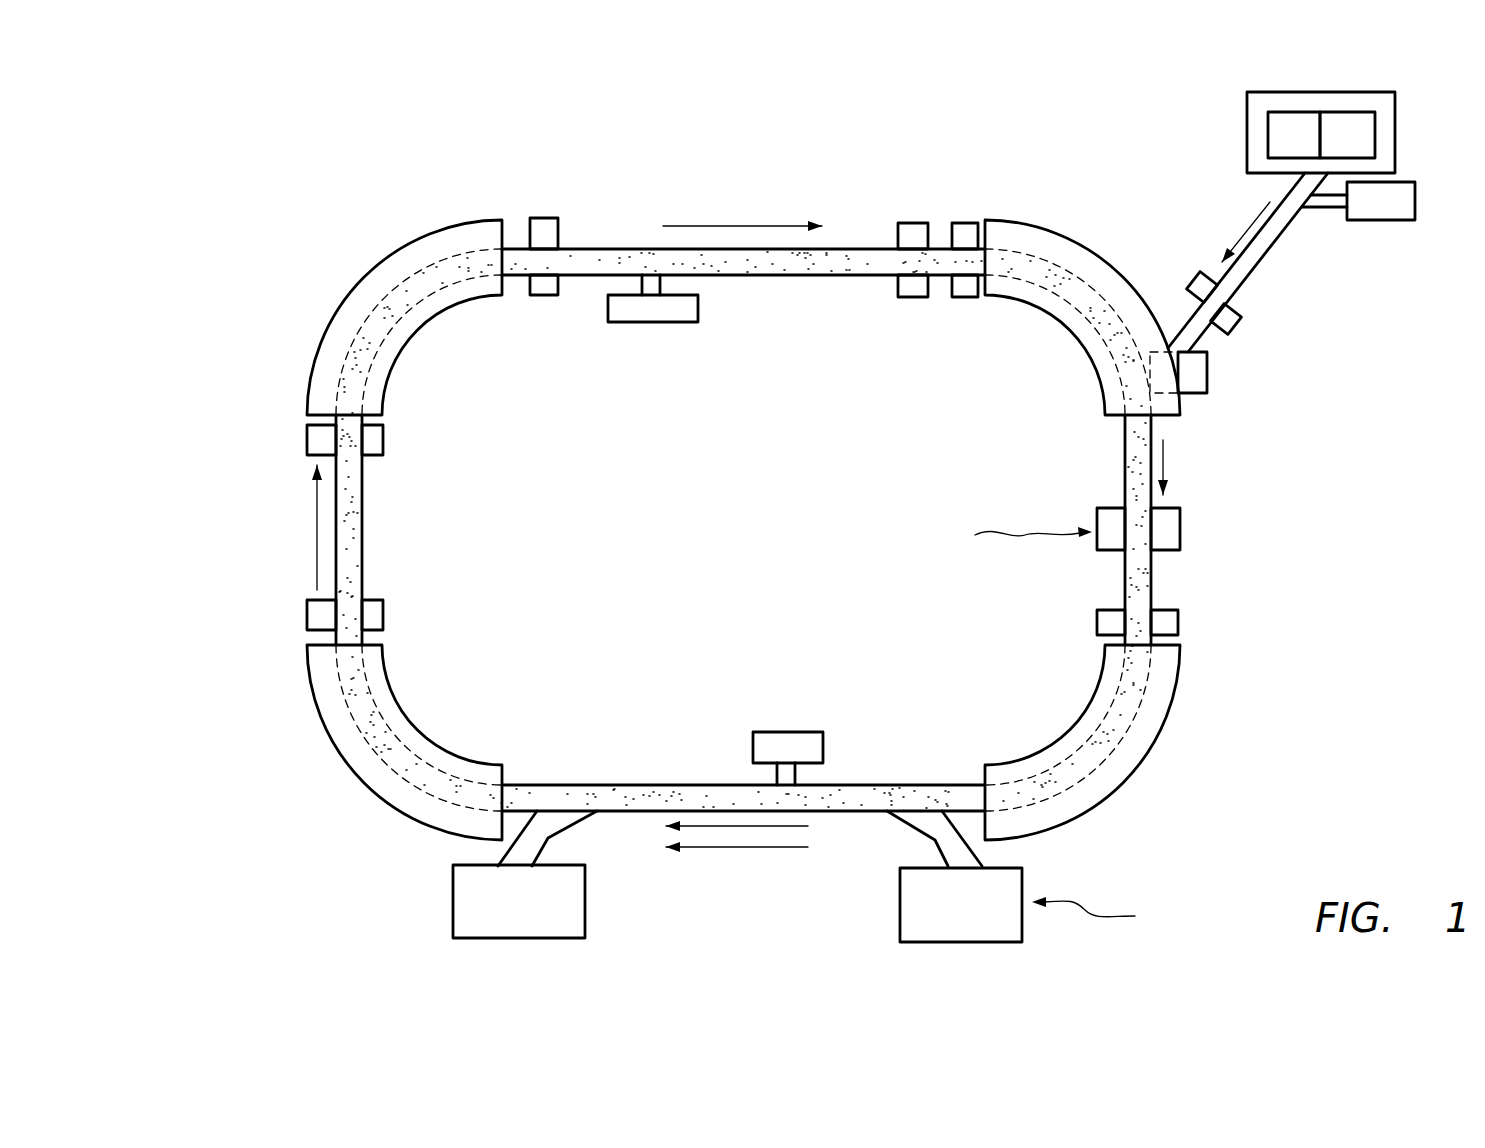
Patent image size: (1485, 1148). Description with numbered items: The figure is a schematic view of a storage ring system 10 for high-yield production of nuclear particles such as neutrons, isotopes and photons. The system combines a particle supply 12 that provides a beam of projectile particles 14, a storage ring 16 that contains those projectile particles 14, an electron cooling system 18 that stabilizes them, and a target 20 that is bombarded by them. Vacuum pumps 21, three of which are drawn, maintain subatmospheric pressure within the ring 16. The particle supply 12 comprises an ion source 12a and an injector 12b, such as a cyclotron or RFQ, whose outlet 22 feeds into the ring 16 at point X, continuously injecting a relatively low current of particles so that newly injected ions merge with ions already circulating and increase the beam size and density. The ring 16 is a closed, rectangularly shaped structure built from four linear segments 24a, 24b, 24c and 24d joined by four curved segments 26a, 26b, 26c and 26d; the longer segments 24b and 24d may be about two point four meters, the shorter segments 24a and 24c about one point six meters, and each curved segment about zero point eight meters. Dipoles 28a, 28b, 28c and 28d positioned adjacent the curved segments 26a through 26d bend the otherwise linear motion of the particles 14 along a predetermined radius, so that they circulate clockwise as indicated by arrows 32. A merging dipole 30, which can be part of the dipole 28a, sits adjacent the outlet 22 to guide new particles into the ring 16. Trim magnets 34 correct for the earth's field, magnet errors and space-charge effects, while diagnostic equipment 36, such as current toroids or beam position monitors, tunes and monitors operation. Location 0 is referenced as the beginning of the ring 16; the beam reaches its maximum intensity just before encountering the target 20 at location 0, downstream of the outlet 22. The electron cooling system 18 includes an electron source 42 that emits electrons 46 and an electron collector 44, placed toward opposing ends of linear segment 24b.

The storage ring system 10 is at (291, 795).
The particle supply 12 is at (1358, 132).
The ion source 12a is at (1294, 135).
The injector 12b is at (1347, 135).
The projectile particles 14 is at (592, 255).
The storage ring 16 is at (866, 248).
The electron cooling system 18 is at (997, 908).
The target 20 is at (1182, 525).
The vacuum pumps 21 is at (1415, 200).
The outlet 22 is at (1262, 262).
The linear segment 24a is at (1155, 572).
The linear segment 24b is at (720, 785).
The linear segment 24c is at (365, 520).
The linear segment 24d is at (742, 275).
The curved segment 26a is at (1042, 290).
The curved segment 26b is at (1095, 730).
The curved segment 26c is at (385, 720).
The curved segment 26d is at (418, 300).
The dipole 28a is at (1077, 273).
The dipole 28b is at (1119, 742).
The dipole 28c is at (357, 739).
The dipole 28d is at (404, 283).
The merging dipole 30 is at (1216, 370).
The arrows 32 is at (722, 225).
The trim magnets 34 is at (550, 298).
The diagnostic equipment 36 is at (912, 298).
The electron source 42 is at (900, 905).
The electron collector 44 is at (453, 900).
The electrons 46 is at (553, 823).
The location 0 is at (1022, 535).
The point X is at (1207, 380).